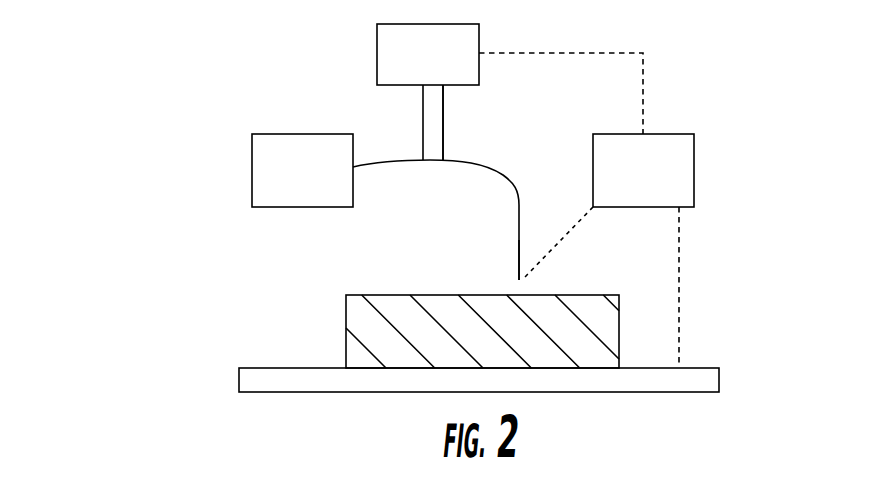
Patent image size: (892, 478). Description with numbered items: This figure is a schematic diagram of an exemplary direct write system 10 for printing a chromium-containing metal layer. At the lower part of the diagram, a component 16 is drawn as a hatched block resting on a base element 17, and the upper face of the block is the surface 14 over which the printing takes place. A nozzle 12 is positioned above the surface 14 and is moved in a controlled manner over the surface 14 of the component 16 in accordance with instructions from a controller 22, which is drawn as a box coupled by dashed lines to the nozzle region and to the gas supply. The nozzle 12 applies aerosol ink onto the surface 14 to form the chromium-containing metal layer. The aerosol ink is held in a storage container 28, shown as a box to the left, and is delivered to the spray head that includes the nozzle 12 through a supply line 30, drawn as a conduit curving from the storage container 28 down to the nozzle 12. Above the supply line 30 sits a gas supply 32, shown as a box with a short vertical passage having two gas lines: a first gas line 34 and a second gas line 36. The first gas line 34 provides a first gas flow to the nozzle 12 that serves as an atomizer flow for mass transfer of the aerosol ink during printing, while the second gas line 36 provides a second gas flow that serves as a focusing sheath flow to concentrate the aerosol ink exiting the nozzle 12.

The direct write system 10 is at (175, 190).
The nozzle 12 is at (513, 279).
The surface 14 is at (595, 287).
The component 16 is at (370, 330).
The substrate plate 17 is at (250, 380).
The controller 22 is at (586, 209).
The storage container 28 is at (302, 170).
The supply line 30 is at (473, 159).
The gas supply 32 is at (428, 54).
The first gas line 34 is at (423, 117).
The second gas line 36 is at (445, 113).